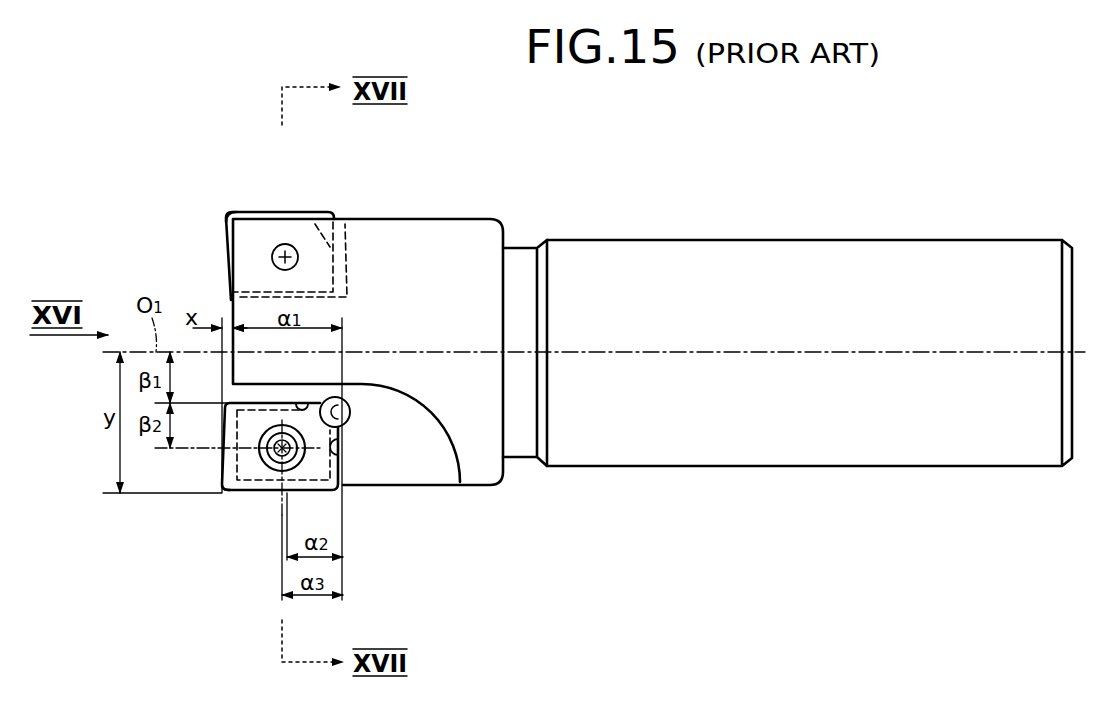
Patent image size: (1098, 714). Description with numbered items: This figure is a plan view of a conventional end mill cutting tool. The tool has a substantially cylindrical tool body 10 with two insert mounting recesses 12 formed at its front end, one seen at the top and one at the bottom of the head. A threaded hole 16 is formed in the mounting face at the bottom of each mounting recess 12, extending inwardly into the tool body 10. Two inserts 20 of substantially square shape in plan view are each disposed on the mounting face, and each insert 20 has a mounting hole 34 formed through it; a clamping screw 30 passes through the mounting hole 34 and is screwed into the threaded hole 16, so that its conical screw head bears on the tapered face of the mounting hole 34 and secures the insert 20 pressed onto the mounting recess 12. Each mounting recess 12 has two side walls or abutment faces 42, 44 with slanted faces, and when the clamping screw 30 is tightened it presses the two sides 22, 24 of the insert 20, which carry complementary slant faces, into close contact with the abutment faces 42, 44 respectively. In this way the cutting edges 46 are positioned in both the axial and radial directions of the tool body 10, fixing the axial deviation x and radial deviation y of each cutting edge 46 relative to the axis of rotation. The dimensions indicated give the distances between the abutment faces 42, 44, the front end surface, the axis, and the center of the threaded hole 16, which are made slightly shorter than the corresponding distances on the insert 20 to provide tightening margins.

The tool body 10 is at (706, 250).
The insert mounting recess 12 is at (313, 220).
The threaded hole 16 is at (272, 257).
The insert 20 is at (263, 212).
The side of the insert 22 is at (341, 246).
The side of the insert 24 is at (230, 300).
The clamping screw 30 is at (278, 470).
The mounting hole 34 is at (265, 468).
The abutment face 42 is at (343, 440).
The abutment face 44 is at (305, 404).
The cutting edge 46 is at (232, 210).